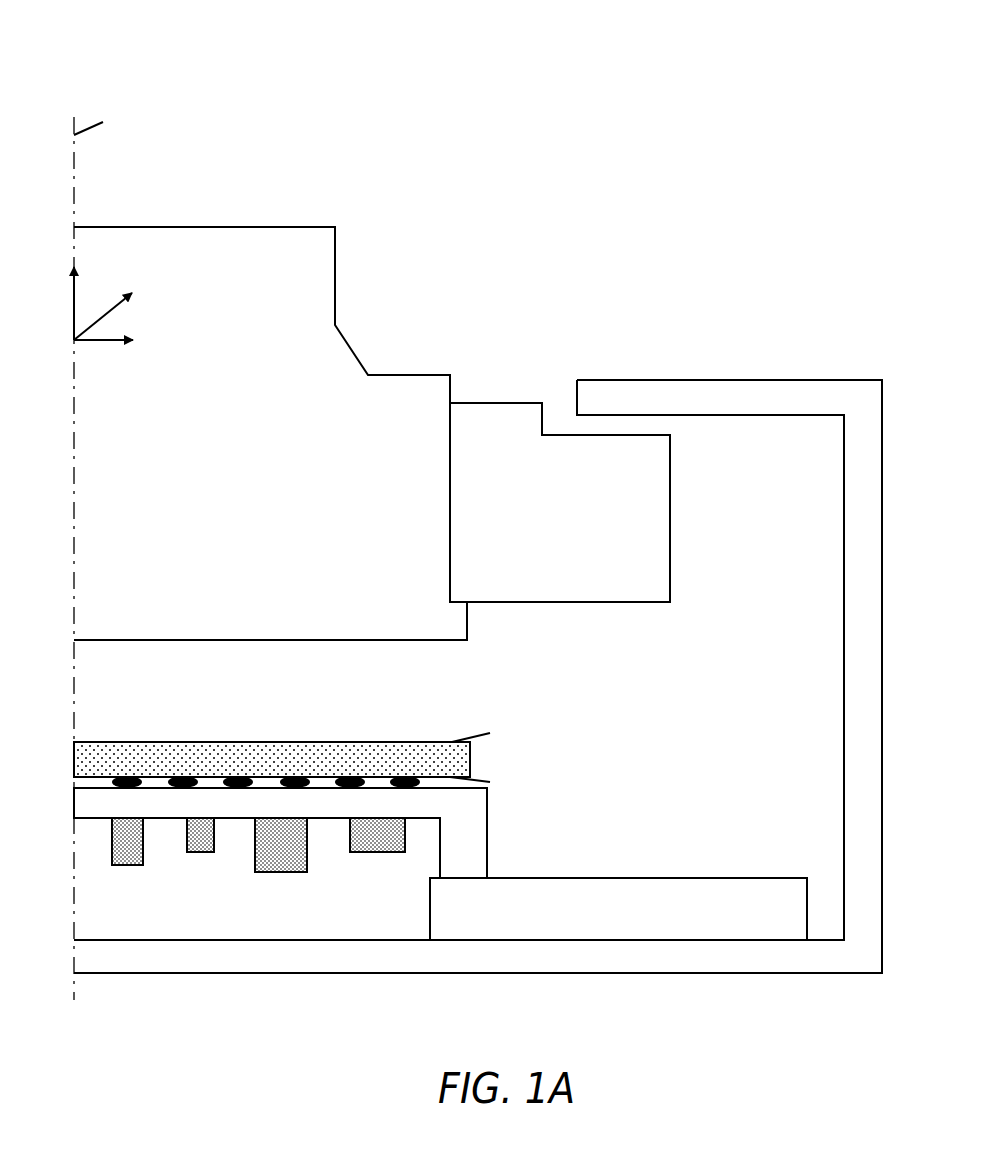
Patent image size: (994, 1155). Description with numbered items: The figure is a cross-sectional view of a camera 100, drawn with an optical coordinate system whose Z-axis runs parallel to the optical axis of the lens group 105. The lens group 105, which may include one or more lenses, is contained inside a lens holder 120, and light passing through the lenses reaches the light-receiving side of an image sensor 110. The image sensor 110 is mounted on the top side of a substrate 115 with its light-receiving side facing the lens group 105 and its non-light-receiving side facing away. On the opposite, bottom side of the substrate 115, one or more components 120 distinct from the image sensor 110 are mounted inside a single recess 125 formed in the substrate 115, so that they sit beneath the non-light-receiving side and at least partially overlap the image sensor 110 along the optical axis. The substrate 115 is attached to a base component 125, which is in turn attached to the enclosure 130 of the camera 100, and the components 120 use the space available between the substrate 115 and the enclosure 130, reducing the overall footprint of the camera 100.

The camera 100 is at (597, 95).
The lens group 105 is at (270, 433).
The image sensor 110 is at (390, 750).
The substrate 115 is at (487, 848).
The lens holder / components 120 is at (135, 857).
The base component / recess 125 is at (123, 912).
The enclosure 130 is at (755, 350).